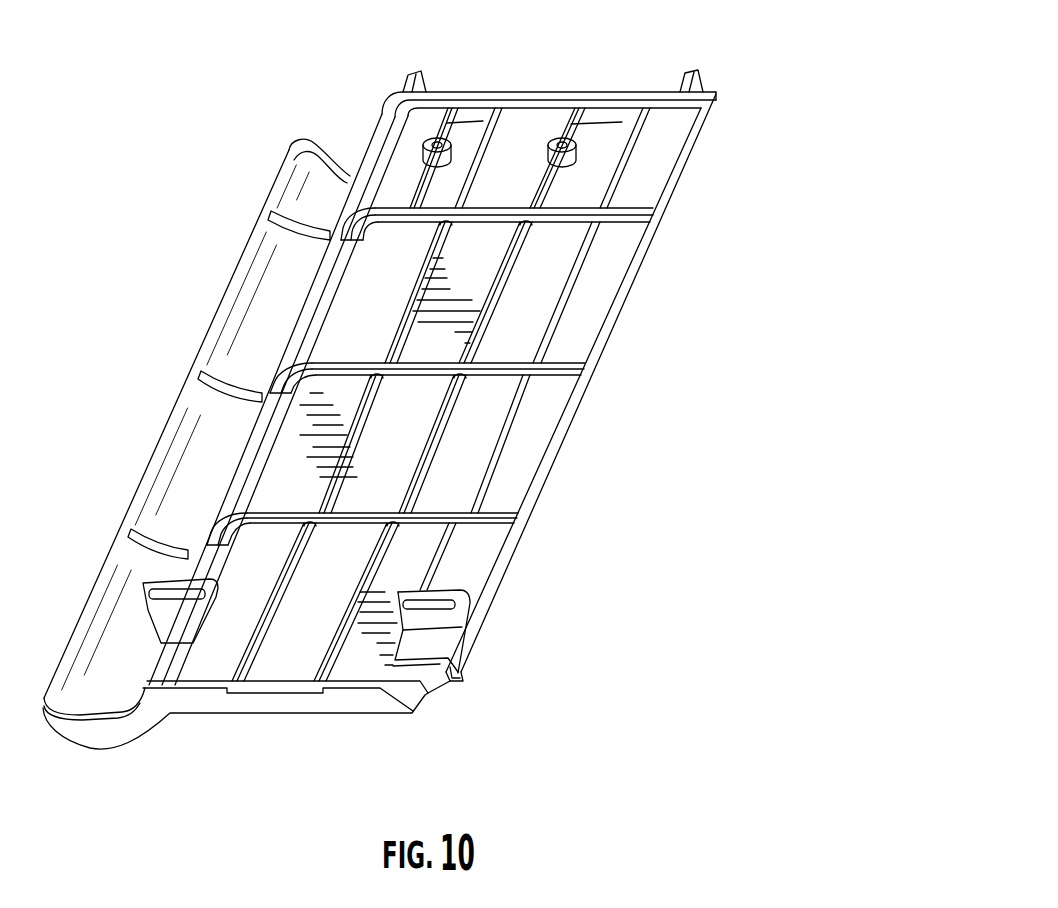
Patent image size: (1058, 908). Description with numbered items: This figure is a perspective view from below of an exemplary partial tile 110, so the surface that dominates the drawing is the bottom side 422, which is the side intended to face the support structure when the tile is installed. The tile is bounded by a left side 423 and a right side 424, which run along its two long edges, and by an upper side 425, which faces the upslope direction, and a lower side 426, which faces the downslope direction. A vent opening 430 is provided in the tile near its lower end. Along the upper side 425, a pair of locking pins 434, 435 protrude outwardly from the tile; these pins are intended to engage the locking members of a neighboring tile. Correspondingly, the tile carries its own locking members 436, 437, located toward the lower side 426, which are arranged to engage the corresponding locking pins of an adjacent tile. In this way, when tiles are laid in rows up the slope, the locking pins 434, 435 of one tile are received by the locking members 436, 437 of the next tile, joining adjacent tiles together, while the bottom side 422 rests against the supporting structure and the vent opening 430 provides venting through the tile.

The partial tile 110 is at (233, 169).
The bottom side 422 is at (455, 443).
The left side 423 is at (588, 392).
The right side 424 is at (197, 350).
The upper side 425 is at (531, 90).
The lower side 426 is at (213, 703).
The vent opening 430 is at (287, 693).
The locking pin 434 is at (680, 81).
The locking pin 435 is at (424, 80).
The locking member 436 is at (160, 612).
The locking member 437 is at (445, 625).